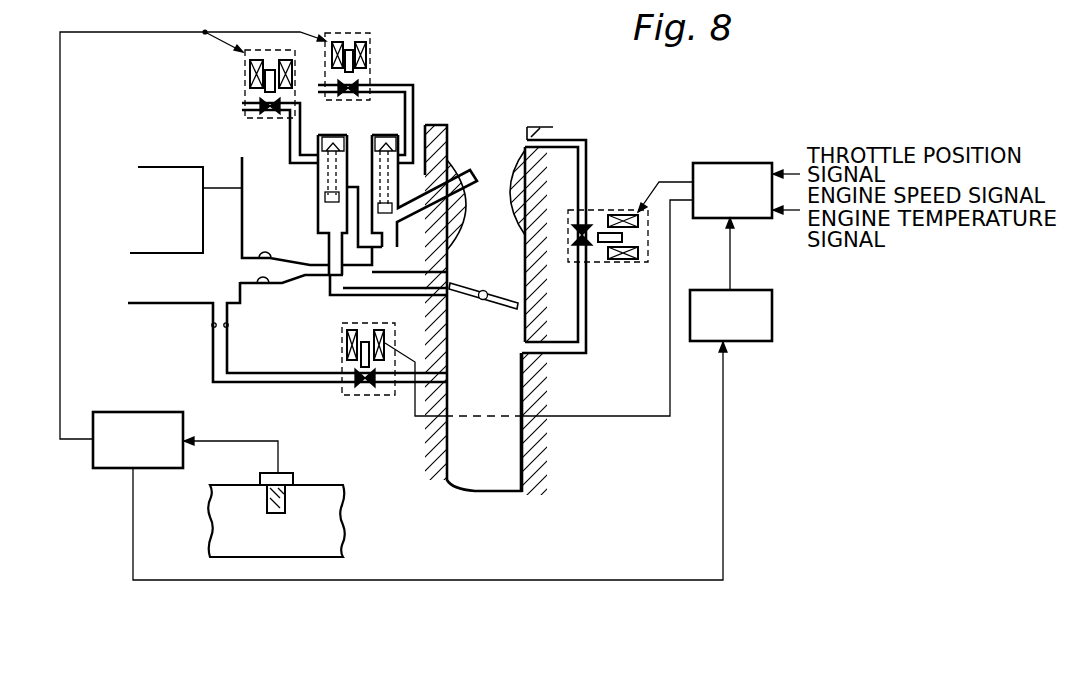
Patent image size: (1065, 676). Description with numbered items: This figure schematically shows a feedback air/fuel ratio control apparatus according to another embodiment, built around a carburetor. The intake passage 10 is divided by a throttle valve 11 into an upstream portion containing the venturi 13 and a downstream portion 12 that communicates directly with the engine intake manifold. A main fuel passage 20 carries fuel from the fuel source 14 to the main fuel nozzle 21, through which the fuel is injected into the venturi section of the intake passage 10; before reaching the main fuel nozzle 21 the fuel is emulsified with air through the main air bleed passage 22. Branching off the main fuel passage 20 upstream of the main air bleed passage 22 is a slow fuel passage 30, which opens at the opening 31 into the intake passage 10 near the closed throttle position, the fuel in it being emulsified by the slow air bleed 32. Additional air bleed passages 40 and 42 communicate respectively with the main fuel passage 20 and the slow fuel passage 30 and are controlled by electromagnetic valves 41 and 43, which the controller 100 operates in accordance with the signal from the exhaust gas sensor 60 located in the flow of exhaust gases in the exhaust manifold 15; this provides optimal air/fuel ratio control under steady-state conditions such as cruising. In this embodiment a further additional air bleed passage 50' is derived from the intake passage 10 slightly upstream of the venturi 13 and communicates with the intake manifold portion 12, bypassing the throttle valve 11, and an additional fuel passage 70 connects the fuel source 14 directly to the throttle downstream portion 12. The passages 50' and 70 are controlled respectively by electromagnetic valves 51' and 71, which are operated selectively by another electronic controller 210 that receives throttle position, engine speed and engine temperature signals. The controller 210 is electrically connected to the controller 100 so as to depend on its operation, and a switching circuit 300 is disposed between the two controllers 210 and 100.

The intake passage 10 is at (512, 249).
The throttle valve 11 is at (484, 290).
The downstream portion 12 is at (508, 363).
The venturi 13 is at (518, 172).
The fuel source 14 is at (171, 303).
The exhaust manifold 15 is at (303, 548).
The main fuel passage 20 is at (317, 273).
The main fuel nozzle 21 is at (472, 190).
The main air bleed passage 22 is at (381, 140).
The slow fuel passage 30 is at (382, 290).
The slow fuel passage opening 31 is at (440, 272).
The slow air bleed 32 is at (333, 140).
The additional air bleed passage 40 is at (409, 85).
The electromagnetic valve 41 is at (348, 40).
The additional air bleed passage 42 is at (257, 118).
The electromagnetic valve 43 is at (270, 50).
The additional air bleed passage 50' is at (584, 245).
The electromagnetic valve 51' is at (608, 258).
The exhaust gas sensor 60 is at (293, 474).
The additional fuel passage 70 is at (289, 374).
The electromagnetic valve 71 is at (364, 396).
The controller 100 is at (143, 412).
The electronic controller 210 is at (737, 163).
The switching circuit 300 is at (762, 282).